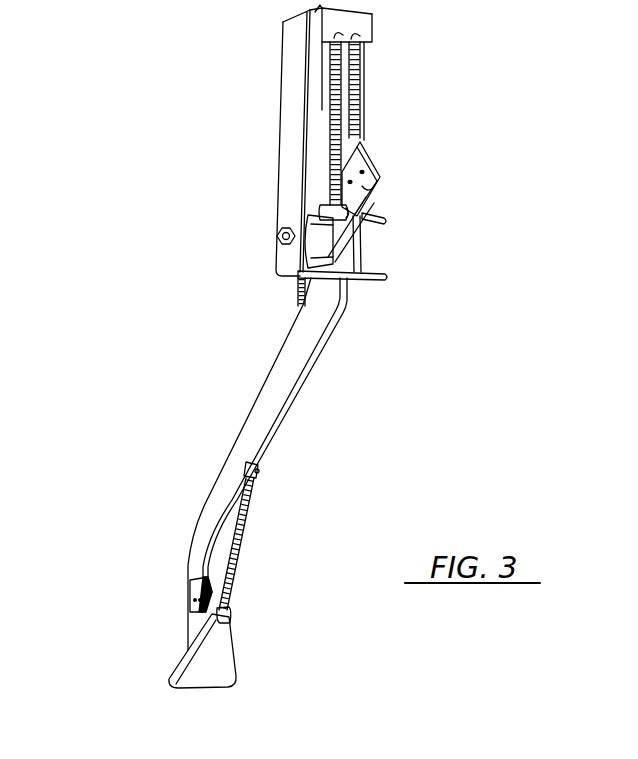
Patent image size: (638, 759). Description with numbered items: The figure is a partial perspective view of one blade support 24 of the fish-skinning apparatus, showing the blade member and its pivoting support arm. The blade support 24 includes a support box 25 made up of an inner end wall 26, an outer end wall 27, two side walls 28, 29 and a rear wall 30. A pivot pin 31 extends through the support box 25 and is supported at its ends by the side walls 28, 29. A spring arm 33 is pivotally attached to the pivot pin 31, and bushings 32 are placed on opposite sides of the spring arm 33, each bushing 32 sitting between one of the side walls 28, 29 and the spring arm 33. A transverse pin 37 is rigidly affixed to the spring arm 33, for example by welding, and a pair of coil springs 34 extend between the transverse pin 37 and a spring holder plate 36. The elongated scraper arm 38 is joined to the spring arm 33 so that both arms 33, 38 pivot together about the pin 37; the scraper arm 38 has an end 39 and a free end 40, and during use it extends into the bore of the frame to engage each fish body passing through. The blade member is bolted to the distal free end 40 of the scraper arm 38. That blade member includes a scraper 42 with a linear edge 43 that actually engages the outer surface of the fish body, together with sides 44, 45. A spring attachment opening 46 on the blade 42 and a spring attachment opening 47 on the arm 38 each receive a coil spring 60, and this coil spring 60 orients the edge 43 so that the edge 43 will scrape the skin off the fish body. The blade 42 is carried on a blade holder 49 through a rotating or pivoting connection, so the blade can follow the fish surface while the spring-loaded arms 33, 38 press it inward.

The blade support 24 is at (219, 262).
The support box 25 is at (280, 65).
The inner end wall 26 is at (380, 282).
The outer end wall 27 is at (313, 13).
The side wall 28 is at (292, 125).
The side wall 29 is at (360, 102).
The rear wall 30 is at (275, 205).
The pivot pin 31 is at (275, 245).
The bushing 32 is at (297, 287).
The spring arm 33 is at (363, 187).
The coil springs 34 is at (340, 88).
The spring holder plate 36 is at (362, 22).
The transverse pin 37 is at (384, 219).
The scraper arm 38 is at (313, 337).
The end 39 is at (347, 300).
The free end 40 is at (188, 580).
The scraper 42 is at (218, 652).
The linear edge 43 is at (203, 688).
The side 44 is at (170, 673).
The side 45 is at (236, 678).
The spring attachment opening 46 is at (229, 618).
The spring attachment opening 47 is at (258, 465).
The blade holder 49 is at (198, 623).
The coil spring 60 is at (240, 550).